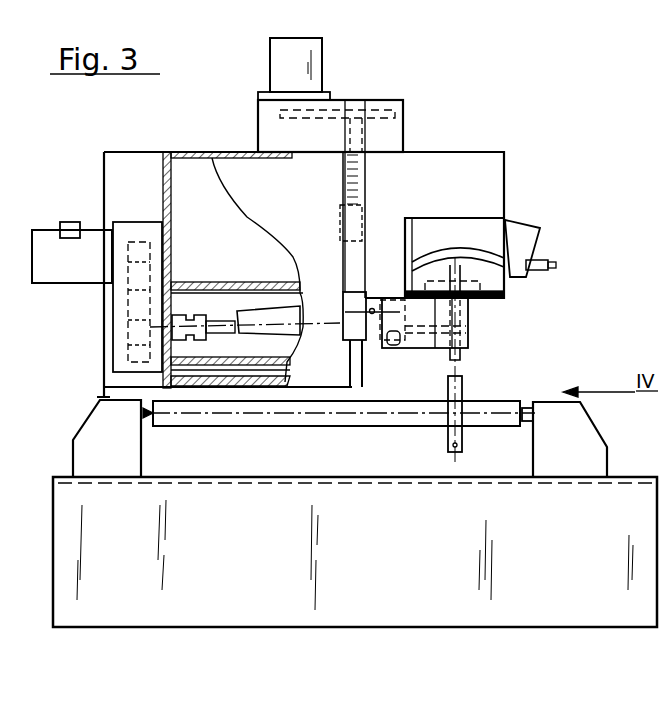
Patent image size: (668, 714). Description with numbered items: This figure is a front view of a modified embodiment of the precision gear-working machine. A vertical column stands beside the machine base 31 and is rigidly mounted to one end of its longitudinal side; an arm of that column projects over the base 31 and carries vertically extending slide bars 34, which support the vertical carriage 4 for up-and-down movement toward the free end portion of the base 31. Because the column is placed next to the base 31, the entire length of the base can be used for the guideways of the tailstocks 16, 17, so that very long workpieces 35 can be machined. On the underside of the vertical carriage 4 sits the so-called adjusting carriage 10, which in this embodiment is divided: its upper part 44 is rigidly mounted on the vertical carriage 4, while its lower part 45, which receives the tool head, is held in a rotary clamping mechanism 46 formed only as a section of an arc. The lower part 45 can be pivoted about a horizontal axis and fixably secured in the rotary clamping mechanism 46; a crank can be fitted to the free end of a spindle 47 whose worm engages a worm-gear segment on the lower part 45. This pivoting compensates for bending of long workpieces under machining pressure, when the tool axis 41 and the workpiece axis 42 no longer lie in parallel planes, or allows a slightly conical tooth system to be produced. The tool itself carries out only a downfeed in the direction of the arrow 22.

The vertical carriage 4 is at (457, 178).
The adjusting carriage 10 is at (560, 203).
The upper part of the adjusting carriage 44 is at (482, 232).
The rotary clamping mechanism 46 is at (486, 256).
The spindle 47 is at (552, 268).
The lower part of the adjusting carriage 45 is at (483, 273).
The tool axis 41 is at (500, 333).
The downfeed direction arrow 22 is at (493, 318).
The workpiece axis 42 is at (500, 417).
The tailstock 16 is at (106, 457).
The machine base 31 is at (183, 560).
The slide bars 34 is at (357, 352).
The workpiece 35 is at (455, 452).
The tailstock 17 is at (578, 465).